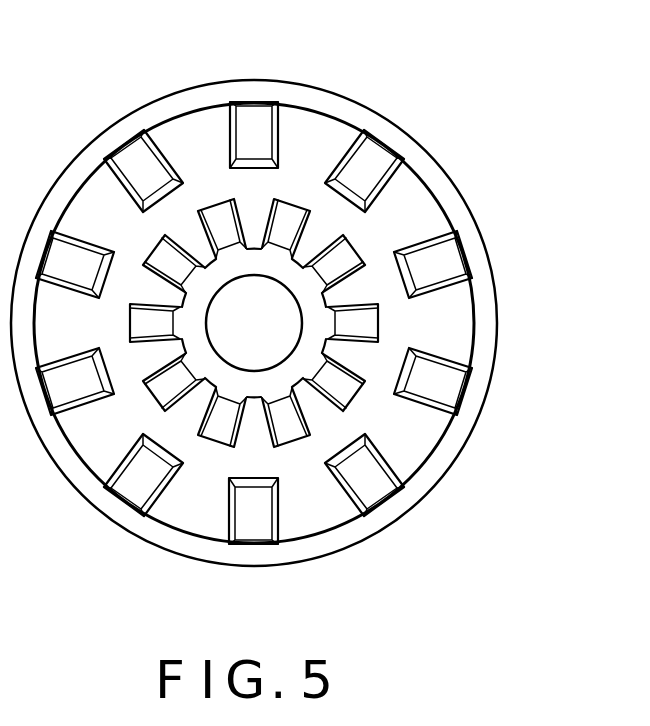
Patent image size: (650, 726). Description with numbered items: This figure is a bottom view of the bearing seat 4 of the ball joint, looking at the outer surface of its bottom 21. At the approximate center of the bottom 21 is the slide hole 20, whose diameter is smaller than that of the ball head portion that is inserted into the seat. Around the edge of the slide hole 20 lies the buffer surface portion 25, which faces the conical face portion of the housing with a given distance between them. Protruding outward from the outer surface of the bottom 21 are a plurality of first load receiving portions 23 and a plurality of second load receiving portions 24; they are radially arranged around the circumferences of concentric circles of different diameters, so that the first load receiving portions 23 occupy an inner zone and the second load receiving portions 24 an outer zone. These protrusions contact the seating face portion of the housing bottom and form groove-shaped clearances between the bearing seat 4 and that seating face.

The bearing seat 4 is at (447, 117).
The slide hole 20 is at (247, 276).
The bottom 21 is at (422, 200).
The first load receiving portions 23 is at (167, 388).
The second load receiving portions 24 is at (260, 140).
The buffer surface portion 25 is at (280, 267).